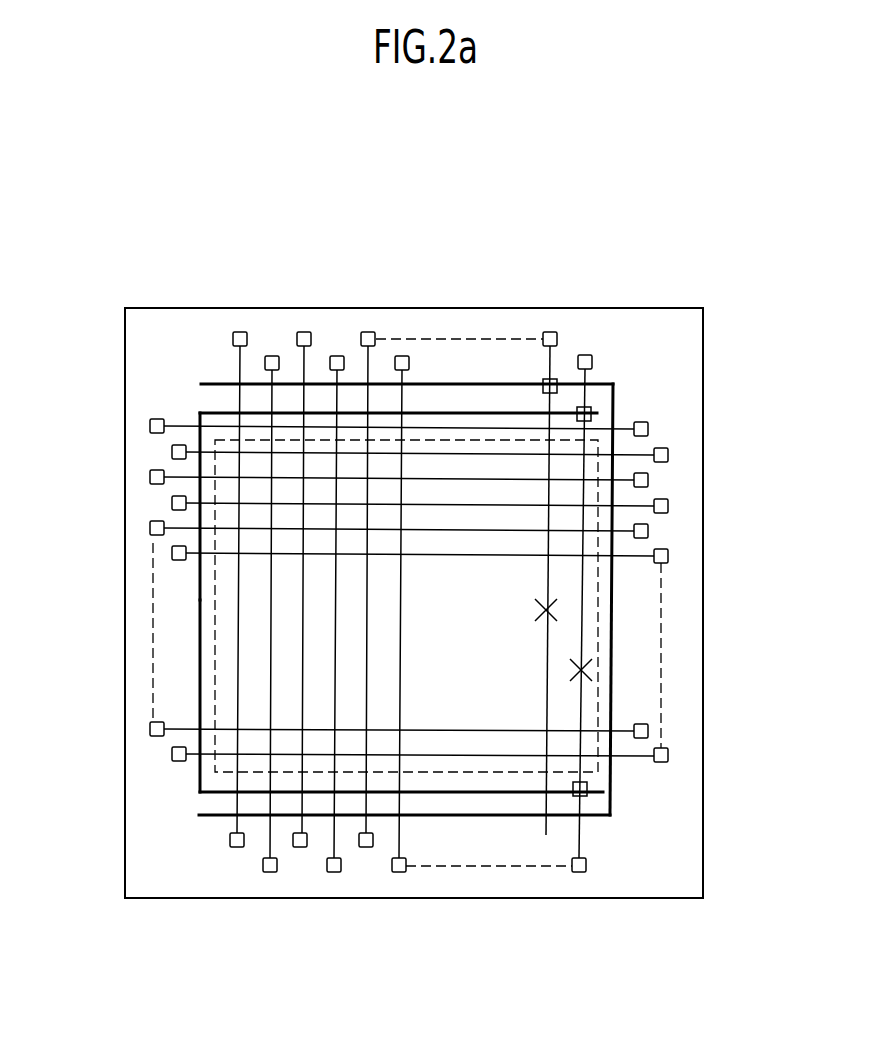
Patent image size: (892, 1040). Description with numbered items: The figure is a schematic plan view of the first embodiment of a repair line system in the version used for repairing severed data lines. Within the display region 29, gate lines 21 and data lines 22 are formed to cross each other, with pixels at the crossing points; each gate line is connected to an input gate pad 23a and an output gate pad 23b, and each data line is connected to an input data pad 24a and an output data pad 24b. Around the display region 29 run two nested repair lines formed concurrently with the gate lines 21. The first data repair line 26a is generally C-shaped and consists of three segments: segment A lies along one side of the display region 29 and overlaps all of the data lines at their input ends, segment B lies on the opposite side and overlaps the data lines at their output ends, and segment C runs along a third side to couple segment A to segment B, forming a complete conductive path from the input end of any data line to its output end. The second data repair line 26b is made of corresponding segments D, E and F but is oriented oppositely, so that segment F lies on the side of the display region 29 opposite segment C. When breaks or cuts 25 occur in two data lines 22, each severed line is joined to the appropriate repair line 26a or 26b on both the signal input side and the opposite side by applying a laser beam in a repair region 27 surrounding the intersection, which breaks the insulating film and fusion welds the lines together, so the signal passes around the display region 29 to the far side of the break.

The gate lines 21 is at (530, 480).
The data lines 22 is at (303, 707).
The input gate pad 23a is at (668, 460).
The output gate pad 23b is at (173, 453).
The input data pad 24a is at (367, 848).
The output data pad 24b is at (555, 332).
The breaks or cuts 25 is at (541, 611).
The first data repair line 26a is at (613, 405).
The second data repair line 26b is at (200, 578).
The repair region 27 is at (550, 388).
The display region 29 is at (598, 615).
The segment A is at (217, 383).
The segment B is at (212, 817).
The segment C is at (613, 583).
The segment D is at (442, 413).
The segment E is at (460, 793).
The segment F is at (200, 784).